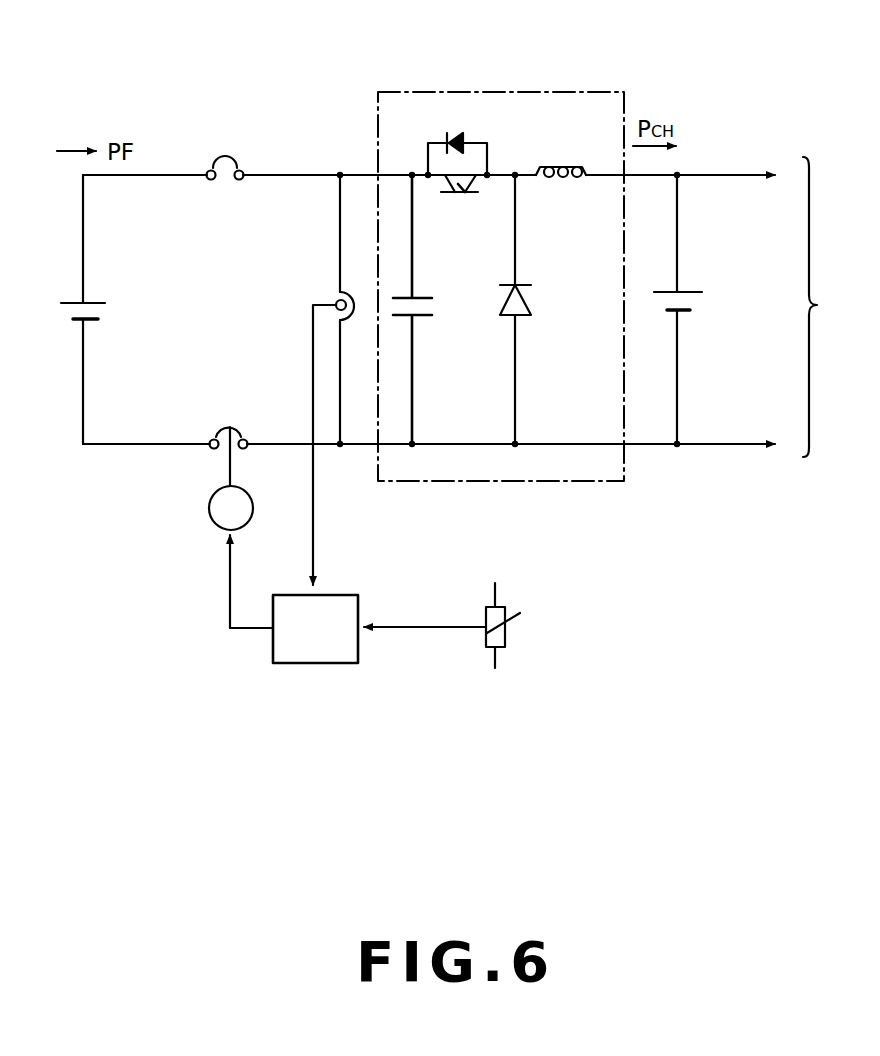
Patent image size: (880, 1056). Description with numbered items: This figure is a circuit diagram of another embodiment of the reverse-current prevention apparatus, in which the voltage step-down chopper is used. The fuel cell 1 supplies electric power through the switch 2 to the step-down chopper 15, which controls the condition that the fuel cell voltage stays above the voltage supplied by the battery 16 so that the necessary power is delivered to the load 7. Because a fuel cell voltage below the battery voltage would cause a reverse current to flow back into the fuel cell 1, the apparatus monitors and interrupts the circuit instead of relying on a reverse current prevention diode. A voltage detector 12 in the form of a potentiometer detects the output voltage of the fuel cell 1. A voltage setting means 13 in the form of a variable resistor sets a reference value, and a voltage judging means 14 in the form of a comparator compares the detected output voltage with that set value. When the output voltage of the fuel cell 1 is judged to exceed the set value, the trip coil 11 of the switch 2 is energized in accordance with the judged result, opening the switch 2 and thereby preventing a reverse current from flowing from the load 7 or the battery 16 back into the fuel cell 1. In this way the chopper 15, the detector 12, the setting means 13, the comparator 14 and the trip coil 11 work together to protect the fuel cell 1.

The fuel cell 1 is at (100, 306).
The switch 2 is at (225, 158).
The load 7 is at (819, 307).
The trip coil 11 is at (208, 510).
The voltage detector 12 is at (346, 293).
The voltage setting means 13 is at (506, 636).
The voltage judging means 14 is at (308, 665).
The step-down chopper 15 is at (473, 92).
The battery 16 is at (692, 300).